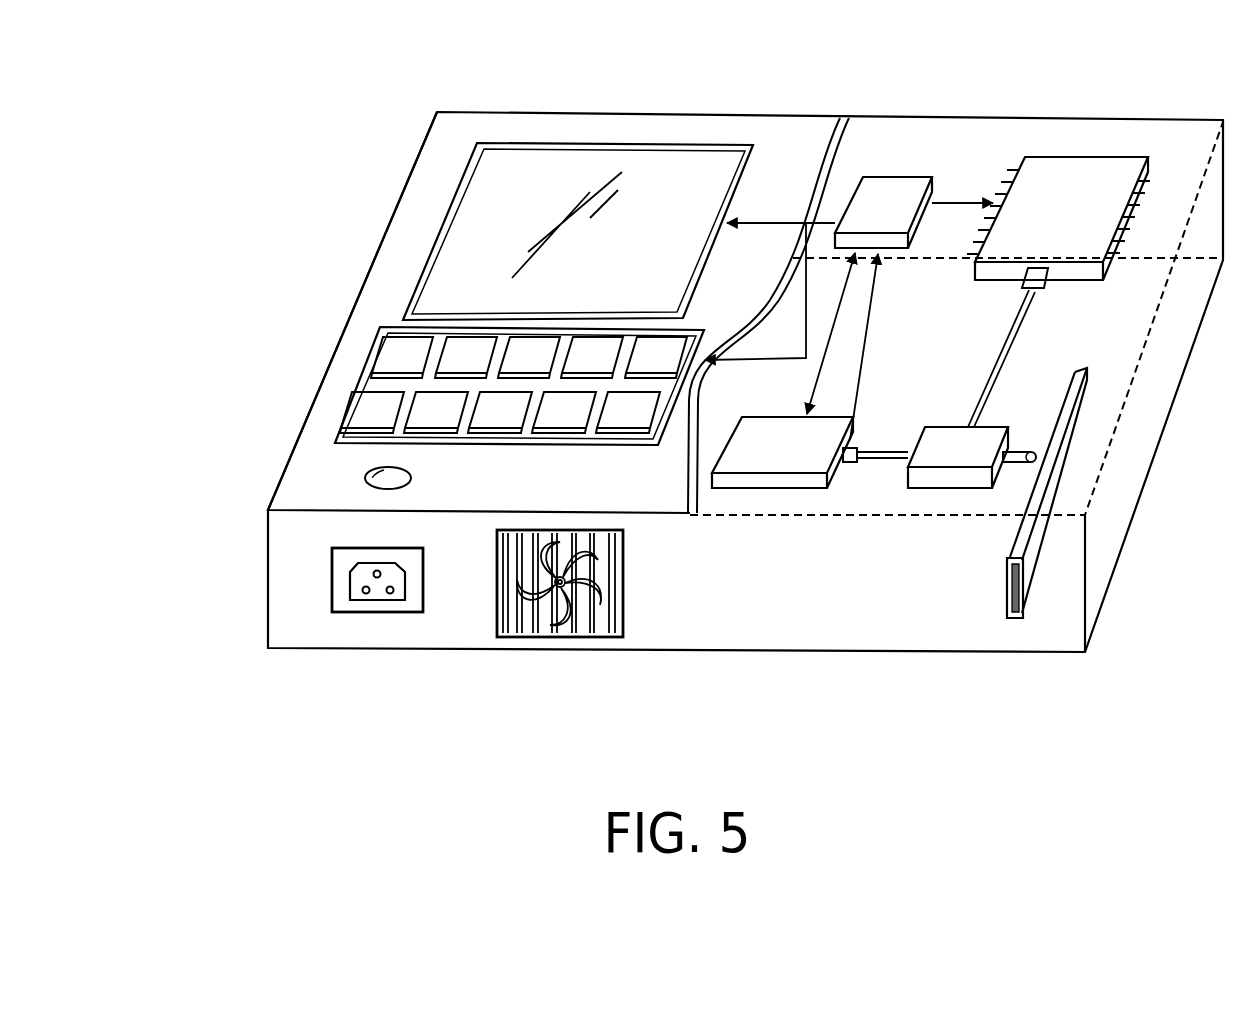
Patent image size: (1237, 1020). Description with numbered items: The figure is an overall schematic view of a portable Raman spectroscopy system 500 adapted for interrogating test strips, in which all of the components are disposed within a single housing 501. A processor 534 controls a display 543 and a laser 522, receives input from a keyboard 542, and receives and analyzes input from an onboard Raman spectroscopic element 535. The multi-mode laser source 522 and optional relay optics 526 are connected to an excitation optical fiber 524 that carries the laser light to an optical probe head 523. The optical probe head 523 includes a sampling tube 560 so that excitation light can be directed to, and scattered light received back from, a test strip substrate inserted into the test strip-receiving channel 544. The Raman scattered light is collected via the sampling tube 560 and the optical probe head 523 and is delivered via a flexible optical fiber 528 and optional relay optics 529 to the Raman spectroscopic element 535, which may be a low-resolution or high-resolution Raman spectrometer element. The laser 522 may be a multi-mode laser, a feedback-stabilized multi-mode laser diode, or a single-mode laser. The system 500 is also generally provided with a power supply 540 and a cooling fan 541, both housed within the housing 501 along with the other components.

The Raman spectroscopy system 500 is at (308, 245).
The housing 501 is at (303, 477).
The laser 522 is at (1058, 218).
The optical probe head 523 is at (958, 457).
The excitation optical fiber 524 is at (1006, 333).
The relay optics 526 is at (1050, 284).
The flexible optical fiber 528 is at (902, 450).
The relay optics 529 is at (855, 446).
The processor 534 is at (849, 308).
The Raman spectroscopic element 535 is at (782, 452).
The power supply 540 is at (376, 612).
The cooling fan 541 is at (549, 637).
The keyboard 542 is at (356, 381).
The display 543 is at (677, 167).
The test strip-receiving channel 544 is at (1017, 618).
The sampling tube 560 is at (1024, 452).